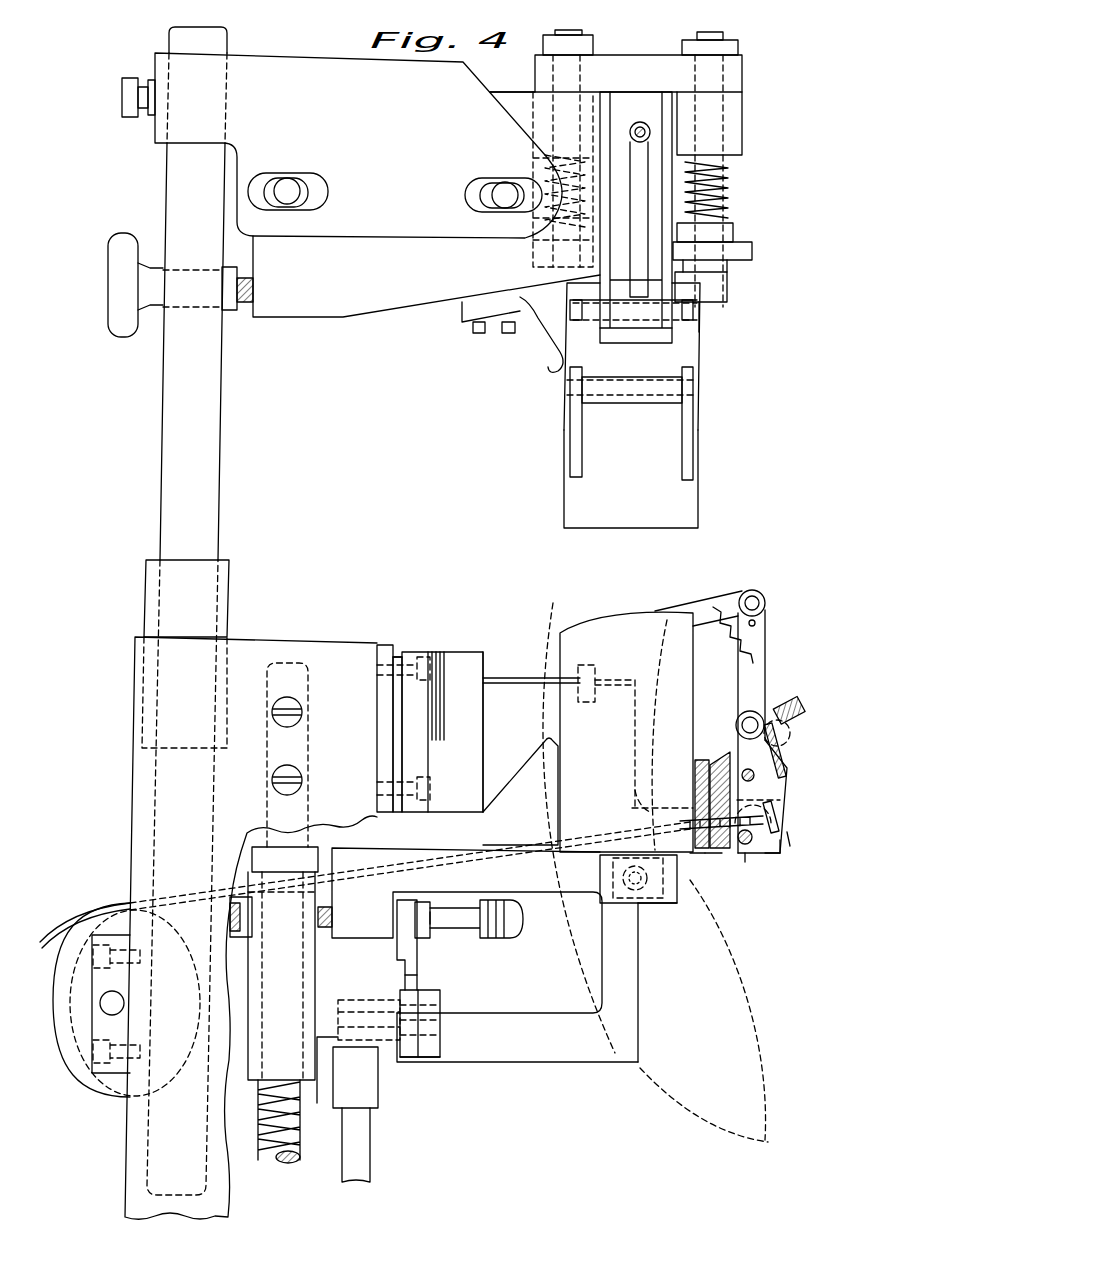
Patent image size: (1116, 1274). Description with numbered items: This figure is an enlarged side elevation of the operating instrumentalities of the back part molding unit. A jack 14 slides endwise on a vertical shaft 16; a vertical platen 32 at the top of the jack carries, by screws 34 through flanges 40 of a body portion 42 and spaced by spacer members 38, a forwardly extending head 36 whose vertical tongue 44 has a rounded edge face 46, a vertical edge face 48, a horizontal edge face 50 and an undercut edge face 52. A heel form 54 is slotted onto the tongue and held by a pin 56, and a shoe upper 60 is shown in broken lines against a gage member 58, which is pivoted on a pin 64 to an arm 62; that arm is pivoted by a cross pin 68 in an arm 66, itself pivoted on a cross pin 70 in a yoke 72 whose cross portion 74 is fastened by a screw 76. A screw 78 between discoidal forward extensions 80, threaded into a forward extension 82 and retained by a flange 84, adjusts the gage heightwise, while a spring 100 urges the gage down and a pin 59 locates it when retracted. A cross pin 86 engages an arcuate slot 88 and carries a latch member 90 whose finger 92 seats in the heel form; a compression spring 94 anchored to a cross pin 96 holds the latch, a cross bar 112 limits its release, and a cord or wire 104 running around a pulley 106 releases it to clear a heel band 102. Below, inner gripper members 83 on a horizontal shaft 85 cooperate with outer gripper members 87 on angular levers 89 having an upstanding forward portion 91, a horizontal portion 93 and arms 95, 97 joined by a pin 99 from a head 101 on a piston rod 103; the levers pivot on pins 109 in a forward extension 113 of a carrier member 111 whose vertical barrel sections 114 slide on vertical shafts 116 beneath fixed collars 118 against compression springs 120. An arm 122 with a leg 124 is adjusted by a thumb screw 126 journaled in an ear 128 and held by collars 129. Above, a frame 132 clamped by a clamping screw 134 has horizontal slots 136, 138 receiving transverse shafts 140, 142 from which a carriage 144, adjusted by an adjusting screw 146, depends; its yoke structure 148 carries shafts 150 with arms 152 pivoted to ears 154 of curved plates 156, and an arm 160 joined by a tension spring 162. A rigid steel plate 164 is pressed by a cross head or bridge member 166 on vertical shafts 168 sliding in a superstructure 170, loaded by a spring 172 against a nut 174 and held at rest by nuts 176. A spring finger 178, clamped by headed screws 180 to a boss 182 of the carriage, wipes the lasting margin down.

The jack 14 is at (135, 765).
The vertical shaft 16 is at (163, 451).
The vertical platen 32 is at (385, 645).
The screws 34 is at (422, 657).
The head 36 is at (435, 702).
The spacer members 38 is at (396, 695).
The flanges 40 is at (430, 740).
The body portion 42 is at (462, 656).
The vertical tongue 44 is at (483, 690).
The rounded edge face 46 is at (520, 679).
The vertical edge face 48 is at (635, 722).
The horizontal edge face 50 is at (636, 782).
The undercut edge face 52 is at (777, 820).
The heel form 54 is at (616, 612).
The pin 56 is at (598, 670).
The gage member 58 is at (700, 601).
The pin 59 is at (758, 623).
The shoe upper 60 is at (556, 626).
The arm 62 is at (766, 652).
The pin 64 is at (754, 592).
The arm 66 is at (742, 735).
The cross pin 68 is at (744, 716).
The cross pin 70 is at (772, 800).
The yoke 72 is at (788, 851).
The cross portion 74 is at (700, 805).
The screw 76 is at (728, 785).
The screw 78 is at (792, 710).
The discoidal forward extensions 80 is at (790, 733).
The forward extension 82 is at (780, 786).
The inner gripper members 83 is at (603, 875).
The flange 84 is at (784, 768).
The horizontal shaft 85 is at (626, 903).
The cross pin 86 is at (764, 862).
The outer gripper members 87 is at (670, 904).
The arcuate slot 88 is at (748, 845).
The angular levers 89 is at (548, 995).
The latch member 90 is at (715, 852).
The upstanding forward portion 91 is at (639, 962).
The finger 92 is at (695, 853).
The horizontal portion 93 is at (530, 1062).
The compression spring 94 is at (650, 828).
The arm 95 is at (417, 982).
The cross pin 96 is at (772, 852).
The arm 97 is at (440, 1000).
The pin 99 is at (372, 1000).
The spring 100 is at (736, 640).
The head 101 is at (378, 1092).
The heel band 102 is at (445, 268).
The piston rod 103 is at (370, 1146).
The cord or wire 104 is at (520, 846).
The pulley 106 is at (100, 1098).
The pins 109 is at (410, 1060).
The carrier member 111 is at (237, 1076).
The cross bar 112 is at (791, 845).
The forward extension 113 is at (319, 1086).
The vertical barrel sections 114 is at (310, 912).
The vertical shafts 116 is at (270, 1150).
The fixed collars 118 is at (300, 856).
The compression springs 120 is at (305, 1150).
The arm 122 is at (526, 936).
The leg 124 is at (354, 938).
The thumb screw 126 is at (498, 910).
The ear 128 is at (405, 905).
The collars 129 is at (425, 936).
The frame 132 is at (257, 62).
The clamping screw 134 is at (129, 78).
The horizontal slot 136 is at (470, 195).
The horizontal slot 138 is at (322, 191).
The transverse shaft 140 is at (504, 187).
The transverse shaft 142 is at (287, 184).
The carriage 144 is at (300, 317).
The adjusting screw 146 is at (121, 336).
The yoke structure 148 is at (677, 113).
The shafts 150 is at (702, 322).
The arms 152 is at (675, 380).
The ears 154 is at (574, 436).
The curved plates 156 is at (564, 500).
The arm 160 is at (634, 145).
The tension spring 162 is at (646, 128).
The rigid steel plate 164 is at (718, 306).
The cross head or bridge member 166 is at (727, 284).
The vertical shafts 168 is at (575, 31).
The superstructure 170 is at (648, 62).
The spring 172 is at (728, 174).
The nut 174 is at (740, 236).
The nuts 176 is at (595, 42).
The spring finger 178 is at (545, 343).
The headed screws 180 is at (508, 334).
The boss 182 is at (470, 306).